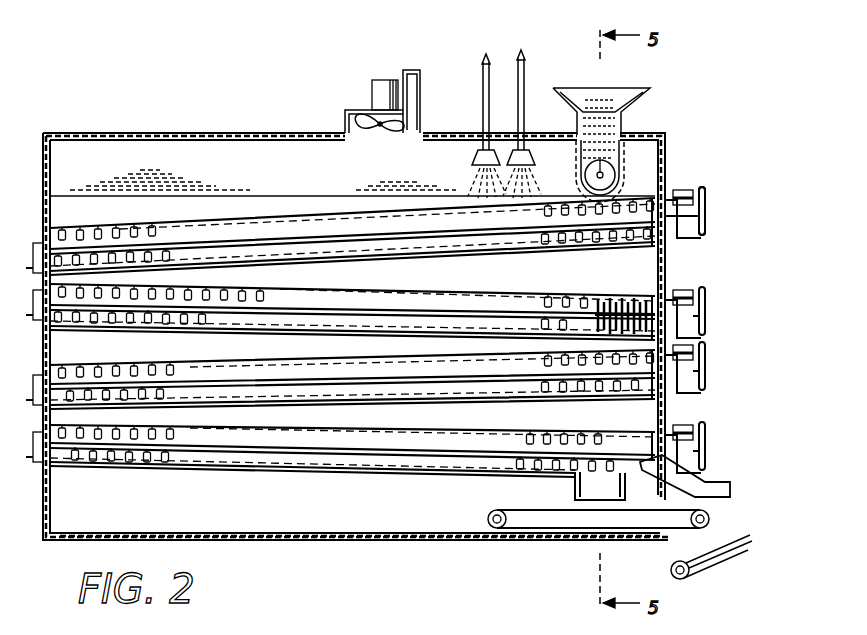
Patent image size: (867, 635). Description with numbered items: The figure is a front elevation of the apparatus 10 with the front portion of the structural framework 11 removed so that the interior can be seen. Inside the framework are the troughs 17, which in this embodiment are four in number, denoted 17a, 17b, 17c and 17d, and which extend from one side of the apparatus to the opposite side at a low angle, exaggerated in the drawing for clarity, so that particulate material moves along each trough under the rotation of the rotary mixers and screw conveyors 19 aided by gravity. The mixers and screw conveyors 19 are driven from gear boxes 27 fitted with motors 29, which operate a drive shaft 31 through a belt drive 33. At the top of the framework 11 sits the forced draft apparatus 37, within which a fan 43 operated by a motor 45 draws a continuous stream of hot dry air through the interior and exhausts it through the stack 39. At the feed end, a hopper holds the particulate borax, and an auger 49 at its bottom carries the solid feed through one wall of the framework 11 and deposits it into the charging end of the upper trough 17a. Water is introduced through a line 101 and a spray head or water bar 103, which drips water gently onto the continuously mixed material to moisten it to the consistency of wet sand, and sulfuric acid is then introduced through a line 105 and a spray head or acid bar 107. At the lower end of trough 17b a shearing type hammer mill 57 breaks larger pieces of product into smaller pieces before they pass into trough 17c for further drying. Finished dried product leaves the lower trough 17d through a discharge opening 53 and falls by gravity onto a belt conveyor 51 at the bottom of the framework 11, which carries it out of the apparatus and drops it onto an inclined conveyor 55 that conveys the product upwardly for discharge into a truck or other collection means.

The apparatus 10 is at (152, 128).
The structural framework 11 is at (183, 133).
The troughs 17 is at (152, 471).
The upper trough 17a is at (120, 228).
The second trough 17b is at (365, 300).
The third trough 17c is at (212, 366).
The lower trough 17d is at (232, 470).
The rotary mixers and screw conveyors 19 is at (548, 302).
The gear boxes 27 is at (676, 238).
The motors 29 is at (682, 190).
The drive shaft 31 is at (692, 238).
The belt drive 33 is at (705, 204).
The forced draft apparatus 37 is at (344, 124).
The stack 39 is at (420, 94).
The fan 43 is at (376, 130).
The motor 45 is at (374, 98).
The auger 49 is at (606, 176).
The conveyor 51 is at (520, 510).
The discharge opening 53 is at (578, 488).
The inclined conveyor 55 is at (670, 572).
The hammer mill 57 is at (620, 298).
The line 101 is at (524, 66).
The water bar 103 is at (534, 164).
The line 105 is at (484, 60).
The acid bar 107 is at (476, 158).